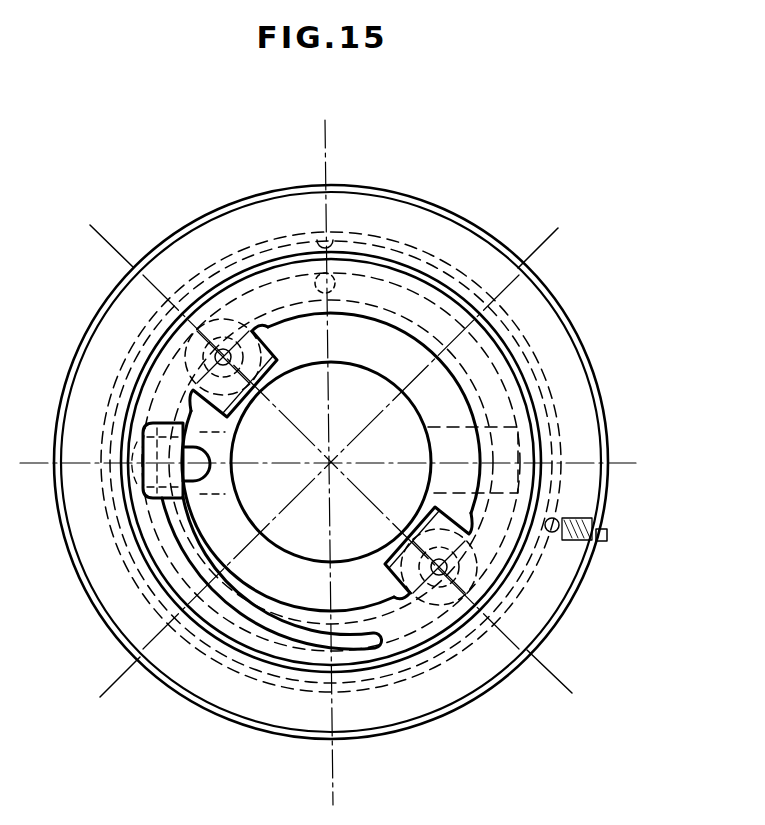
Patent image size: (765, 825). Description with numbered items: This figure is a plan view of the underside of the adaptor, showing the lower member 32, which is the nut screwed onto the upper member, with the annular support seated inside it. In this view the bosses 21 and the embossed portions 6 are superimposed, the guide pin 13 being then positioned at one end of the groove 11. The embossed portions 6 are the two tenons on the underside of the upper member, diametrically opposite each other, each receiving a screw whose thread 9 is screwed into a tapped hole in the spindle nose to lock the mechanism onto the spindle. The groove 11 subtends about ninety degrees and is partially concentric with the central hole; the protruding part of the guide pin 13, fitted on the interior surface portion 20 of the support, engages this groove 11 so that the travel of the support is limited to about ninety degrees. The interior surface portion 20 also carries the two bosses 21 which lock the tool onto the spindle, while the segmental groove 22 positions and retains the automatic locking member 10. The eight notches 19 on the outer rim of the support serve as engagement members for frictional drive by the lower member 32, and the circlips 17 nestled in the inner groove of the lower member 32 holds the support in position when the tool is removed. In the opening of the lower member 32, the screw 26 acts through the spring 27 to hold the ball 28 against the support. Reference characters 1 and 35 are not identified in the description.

The shaft bore 1 is at (451, 426).
The embossed portions 6 is at (290, 358).
The thread 9 is at (229, 332).
The locking member 10 is at (161, 424).
The groove 11 is at (412, 297).
The guide pin 13 is at (313, 285).
The circlips 17 is at (126, 358).
The notches 19 is at (182, 298).
The interior surface portion 20 is at (408, 334).
The bosses 21 is at (240, 415).
The segmental groove 22 is at (221, 546).
The screw 26 is at (608, 534).
The spring 27 is at (578, 541).
The ball 28 is at (556, 520).
The lower member 32 is at (596, 370).
The inner groove ring 35 is at (367, 246).